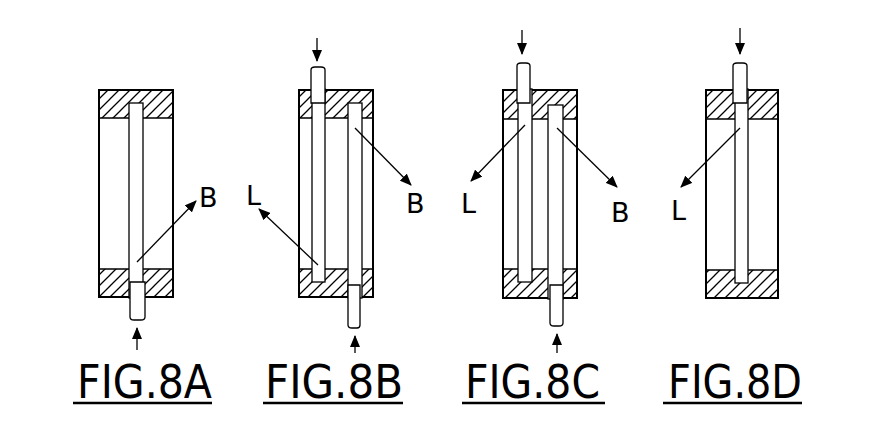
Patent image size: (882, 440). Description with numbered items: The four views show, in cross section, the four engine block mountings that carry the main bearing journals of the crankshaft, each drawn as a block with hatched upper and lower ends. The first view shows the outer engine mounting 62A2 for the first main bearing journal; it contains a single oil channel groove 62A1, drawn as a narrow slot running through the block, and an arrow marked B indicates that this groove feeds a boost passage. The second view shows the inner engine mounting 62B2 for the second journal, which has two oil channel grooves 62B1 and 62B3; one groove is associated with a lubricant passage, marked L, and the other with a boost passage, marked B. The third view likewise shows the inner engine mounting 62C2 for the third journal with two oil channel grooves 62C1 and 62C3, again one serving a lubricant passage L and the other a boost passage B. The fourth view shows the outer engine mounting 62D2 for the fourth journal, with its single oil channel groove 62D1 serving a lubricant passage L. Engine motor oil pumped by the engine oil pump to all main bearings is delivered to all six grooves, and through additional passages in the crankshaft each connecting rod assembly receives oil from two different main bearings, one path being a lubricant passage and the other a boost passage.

In FIG. 8A, the oil channel groove 62A1 is at (135, 133).
In FIG. 8A, the engine mounting 62A2 is at (168, 284).
In FIG. 8B, the oil channel groove 62B1 is at (316, 135).
In FIG. 8B, the engine mounting 62B2 is at (371, 288).
In FIG. 8B, the oil channel groove 62B3 is at (356, 128).
In FIG. 8C, the oil channel groove 62C1 is at (520, 125).
In FIG. 8C, the engine mounting 62C2 is at (575, 289).
In FIG. 8C, the oil channel groove 62C3 is at (556, 128).
In FIG. 8D, the oil channel groove 62D1 is at (745, 153).
In FIG. 8D, the engine mounting 62D2 is at (775, 289).